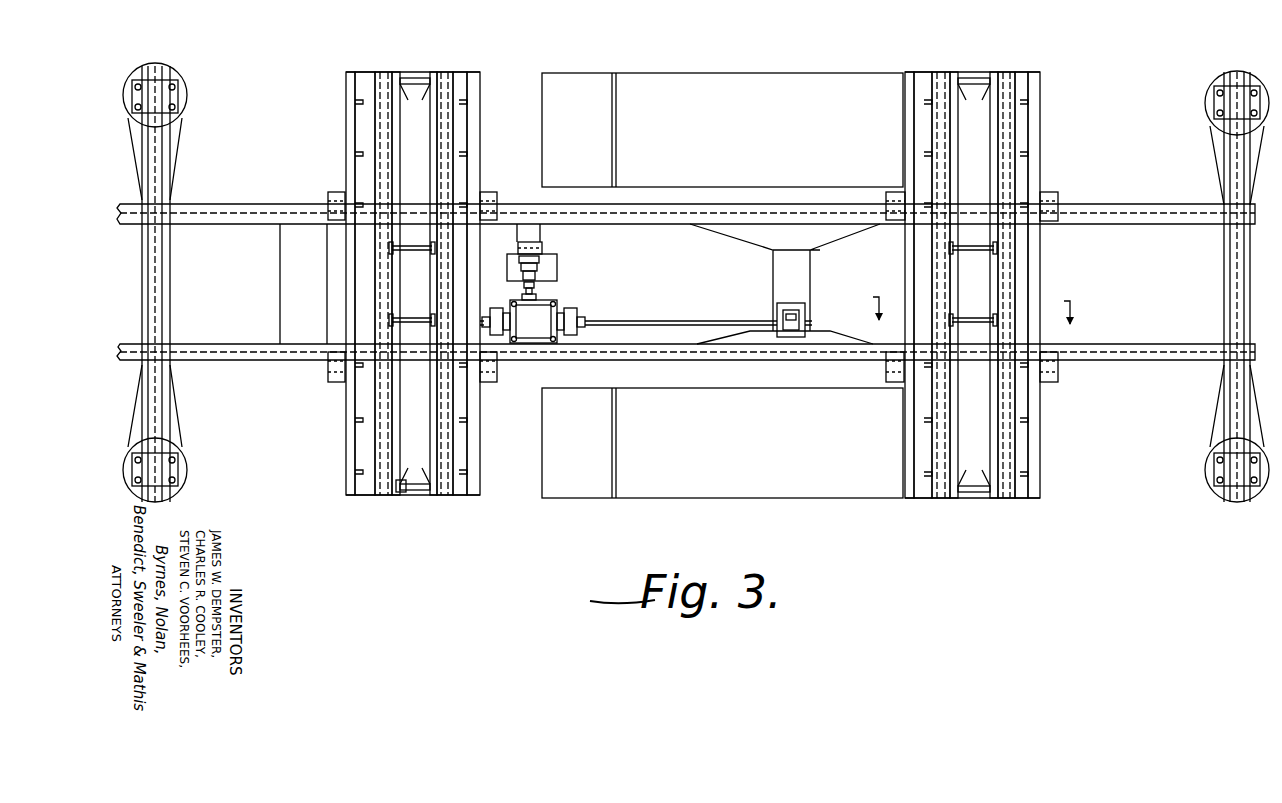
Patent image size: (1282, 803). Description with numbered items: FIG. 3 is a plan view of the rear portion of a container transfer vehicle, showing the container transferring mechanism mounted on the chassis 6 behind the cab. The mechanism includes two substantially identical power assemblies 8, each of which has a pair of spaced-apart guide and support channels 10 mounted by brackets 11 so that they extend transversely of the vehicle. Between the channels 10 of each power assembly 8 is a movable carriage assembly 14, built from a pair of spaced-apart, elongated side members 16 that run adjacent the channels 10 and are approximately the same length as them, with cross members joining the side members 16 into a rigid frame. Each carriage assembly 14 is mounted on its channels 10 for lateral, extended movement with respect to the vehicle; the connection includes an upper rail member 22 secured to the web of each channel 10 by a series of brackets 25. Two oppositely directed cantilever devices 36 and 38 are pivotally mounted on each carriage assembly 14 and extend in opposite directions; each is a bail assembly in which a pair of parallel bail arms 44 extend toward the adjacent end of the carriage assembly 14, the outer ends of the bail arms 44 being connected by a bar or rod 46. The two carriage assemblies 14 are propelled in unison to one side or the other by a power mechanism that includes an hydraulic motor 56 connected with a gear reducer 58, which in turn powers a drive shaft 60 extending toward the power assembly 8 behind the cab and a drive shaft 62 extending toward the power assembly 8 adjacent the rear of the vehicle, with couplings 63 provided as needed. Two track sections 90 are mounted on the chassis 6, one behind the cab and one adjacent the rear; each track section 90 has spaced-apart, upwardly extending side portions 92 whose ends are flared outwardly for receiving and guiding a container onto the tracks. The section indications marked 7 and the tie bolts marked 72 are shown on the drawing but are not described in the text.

The chassis 6 is at (268, 225).
The section line 7 is at (980, 306).
The power assembly 8 is at (485, 74).
The guide and support channel 10 is at (346, 120).
The bracket 11 is at (490, 192).
The carriage assembly 14 is at (382, 72).
The side member 16 is at (383, 178).
The upper rail member 22 is at (365, 150).
The bracket 25 is at (467, 103).
The cantilever device 36 is at (987, 74).
The cantilever device 38 is at (432, 500).
The bail arm 44 is at (398, 490).
The bar or rod 46 is at (432, 78).
The hydraulic motor 56 is at (412, 72).
The gear reducer 58 is at (545, 304).
The drive shaft 60 is at (425, 319).
The drive shaft 62 is at (660, 321).
The coupling 63 is at (576, 320).
The tie bolt 72 is at (418, 252).
The track section 90 is at (178, 410).
The side portion 92 is at (160, 272).